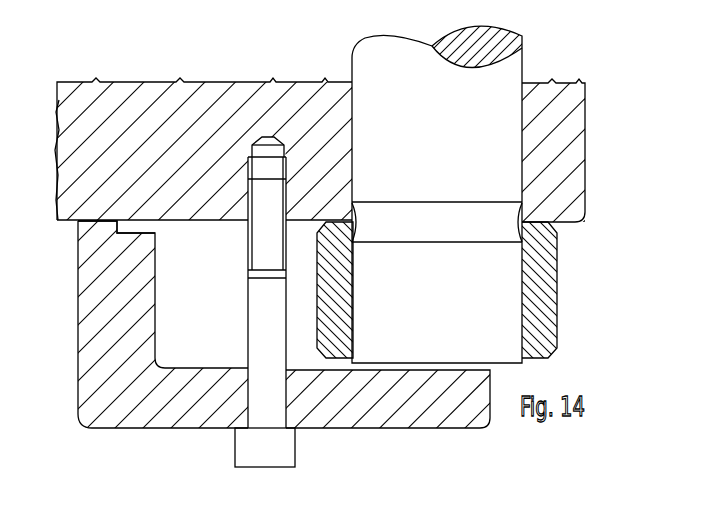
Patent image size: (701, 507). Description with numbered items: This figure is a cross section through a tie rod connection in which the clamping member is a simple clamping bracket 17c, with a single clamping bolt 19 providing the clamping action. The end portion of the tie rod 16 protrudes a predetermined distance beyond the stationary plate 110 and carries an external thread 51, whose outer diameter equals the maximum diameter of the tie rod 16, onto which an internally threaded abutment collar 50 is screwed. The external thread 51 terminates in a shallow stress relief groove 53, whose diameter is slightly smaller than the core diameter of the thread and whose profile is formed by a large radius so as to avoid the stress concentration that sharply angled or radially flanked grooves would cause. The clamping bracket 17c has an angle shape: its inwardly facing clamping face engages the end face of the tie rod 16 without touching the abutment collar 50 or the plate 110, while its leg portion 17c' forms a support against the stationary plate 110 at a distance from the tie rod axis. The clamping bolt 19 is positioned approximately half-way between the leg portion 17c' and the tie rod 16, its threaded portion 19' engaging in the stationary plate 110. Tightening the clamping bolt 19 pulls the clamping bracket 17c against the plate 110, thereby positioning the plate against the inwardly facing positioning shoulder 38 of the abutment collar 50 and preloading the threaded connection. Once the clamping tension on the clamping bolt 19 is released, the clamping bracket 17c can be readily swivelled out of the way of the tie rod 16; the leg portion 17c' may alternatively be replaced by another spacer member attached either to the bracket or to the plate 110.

The stationary plate 110 is at (205, 123).
The leg portion 17c' is at (116, 143).
The clamping bracket 17c is at (280, 325).
The tie rod 16 is at (493, 78).
The stress relief groove 53 is at (426, 210).
The positioning shoulder 38 is at (540, 221).
The threaded portion 19' is at (239, 207).
The clamping bolt 19 is at (319, 312).
The external thread 51 is at (358, 274).
The abutment collar 50 is at (543, 281).